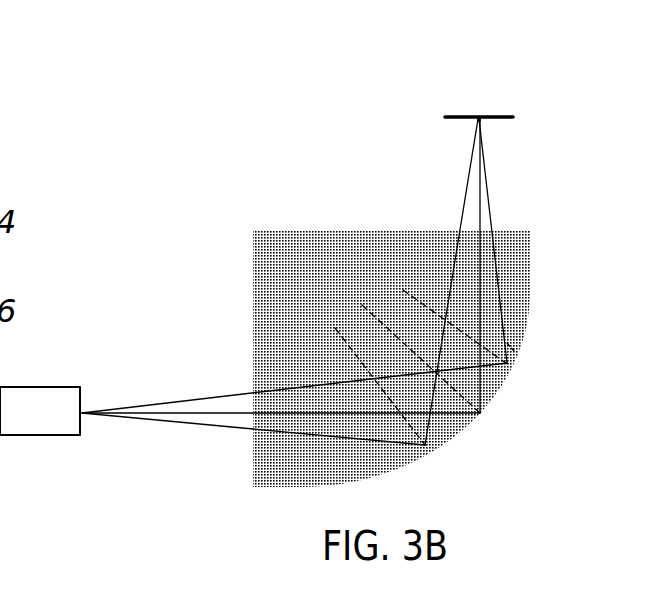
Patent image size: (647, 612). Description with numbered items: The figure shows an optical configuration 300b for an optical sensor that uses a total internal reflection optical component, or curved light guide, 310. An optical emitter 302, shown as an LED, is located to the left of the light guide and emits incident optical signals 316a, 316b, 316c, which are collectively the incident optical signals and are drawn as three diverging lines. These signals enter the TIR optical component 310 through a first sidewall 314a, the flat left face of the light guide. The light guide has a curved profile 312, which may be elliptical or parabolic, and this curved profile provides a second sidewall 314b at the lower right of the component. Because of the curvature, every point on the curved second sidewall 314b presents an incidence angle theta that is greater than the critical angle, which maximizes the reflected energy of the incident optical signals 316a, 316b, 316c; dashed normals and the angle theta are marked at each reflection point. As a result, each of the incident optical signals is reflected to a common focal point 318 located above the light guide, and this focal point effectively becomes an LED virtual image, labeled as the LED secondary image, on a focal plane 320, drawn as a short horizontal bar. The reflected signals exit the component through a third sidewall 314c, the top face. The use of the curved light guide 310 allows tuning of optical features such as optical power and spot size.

The optical configuration 300b is at (428, 31).
The optical emitter 302 is at (42, 386).
The total internal reflection optical component 310 is at (512, 231).
The curved profile 312 is at (530, 283).
The first sidewall 314a is at (255, 285).
The second sidewall 314b is at (314, 477).
The third sidewall 314c is at (322, 230).
The incident optical signal 316a is at (222, 428).
The incident optical signal 316b is at (195, 414).
The incident optical signal 316c is at (148, 403).
The common focal point 318 is at (483, 122).
The focal plane 320 is at (461, 116).